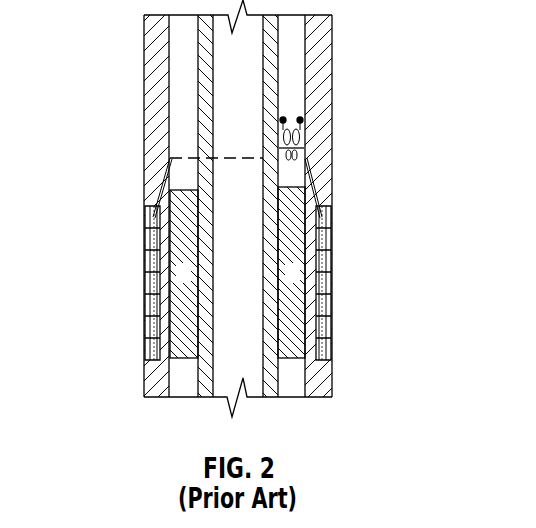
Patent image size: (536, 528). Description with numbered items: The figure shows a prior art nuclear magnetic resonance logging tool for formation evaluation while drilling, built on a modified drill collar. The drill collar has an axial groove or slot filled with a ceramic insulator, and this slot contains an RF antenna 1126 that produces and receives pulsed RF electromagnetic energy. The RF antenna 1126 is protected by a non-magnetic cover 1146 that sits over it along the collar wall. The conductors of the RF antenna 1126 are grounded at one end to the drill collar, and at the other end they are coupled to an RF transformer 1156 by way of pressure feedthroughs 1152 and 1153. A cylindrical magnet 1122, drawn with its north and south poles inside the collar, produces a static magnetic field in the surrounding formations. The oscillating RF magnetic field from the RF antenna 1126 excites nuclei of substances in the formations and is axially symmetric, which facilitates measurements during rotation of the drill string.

The RF transformer 1156 is at (332, 73).
The pressure feedthrough 1152 is at (310, 160).
The pressure feedthrough 1153 is at (165, 172).
The non-magnetic cover 1146 is at (145, 240).
The RF antenna 1126 is at (150, 273).
The cylindrical magnet 1122 is at (172, 338).